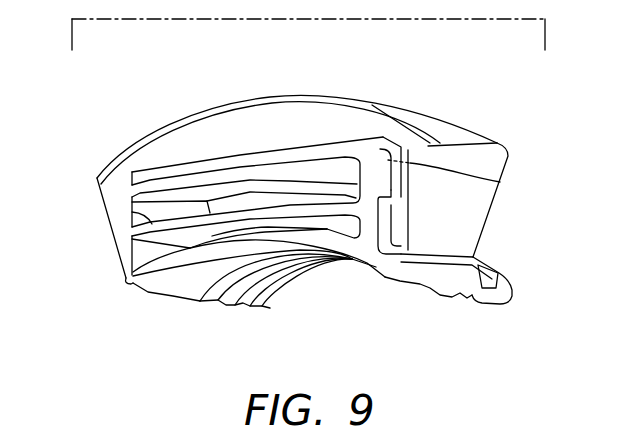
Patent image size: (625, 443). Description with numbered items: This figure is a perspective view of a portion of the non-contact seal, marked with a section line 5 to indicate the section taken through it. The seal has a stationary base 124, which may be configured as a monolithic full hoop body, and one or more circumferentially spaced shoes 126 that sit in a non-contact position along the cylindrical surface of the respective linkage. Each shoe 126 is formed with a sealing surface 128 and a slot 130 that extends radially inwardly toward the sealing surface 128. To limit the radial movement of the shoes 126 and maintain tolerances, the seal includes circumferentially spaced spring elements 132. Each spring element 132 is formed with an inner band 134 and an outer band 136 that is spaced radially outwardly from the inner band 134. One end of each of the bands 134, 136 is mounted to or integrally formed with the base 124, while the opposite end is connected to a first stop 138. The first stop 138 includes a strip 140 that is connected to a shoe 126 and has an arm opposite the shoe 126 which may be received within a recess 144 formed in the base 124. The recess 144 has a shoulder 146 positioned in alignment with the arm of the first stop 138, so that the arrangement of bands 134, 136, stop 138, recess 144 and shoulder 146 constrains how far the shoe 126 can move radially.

The section line 5- 5 is at (309, 54).
The base 124 is at (376, 106).
The shoe 126 is at (160, 308).
The sealing surface 128 is at (195, 276).
The slot 130 is at (496, 270).
The spring element 132 is at (158, 156).
The inner band 134 is at (133, 218).
The outer band 136 is at (213, 165).
The first stop 138 is at (398, 265).
The strip 140 is at (376, 252).
The recess 144 is at (503, 182).
The shoulder 146 is at (400, 268).